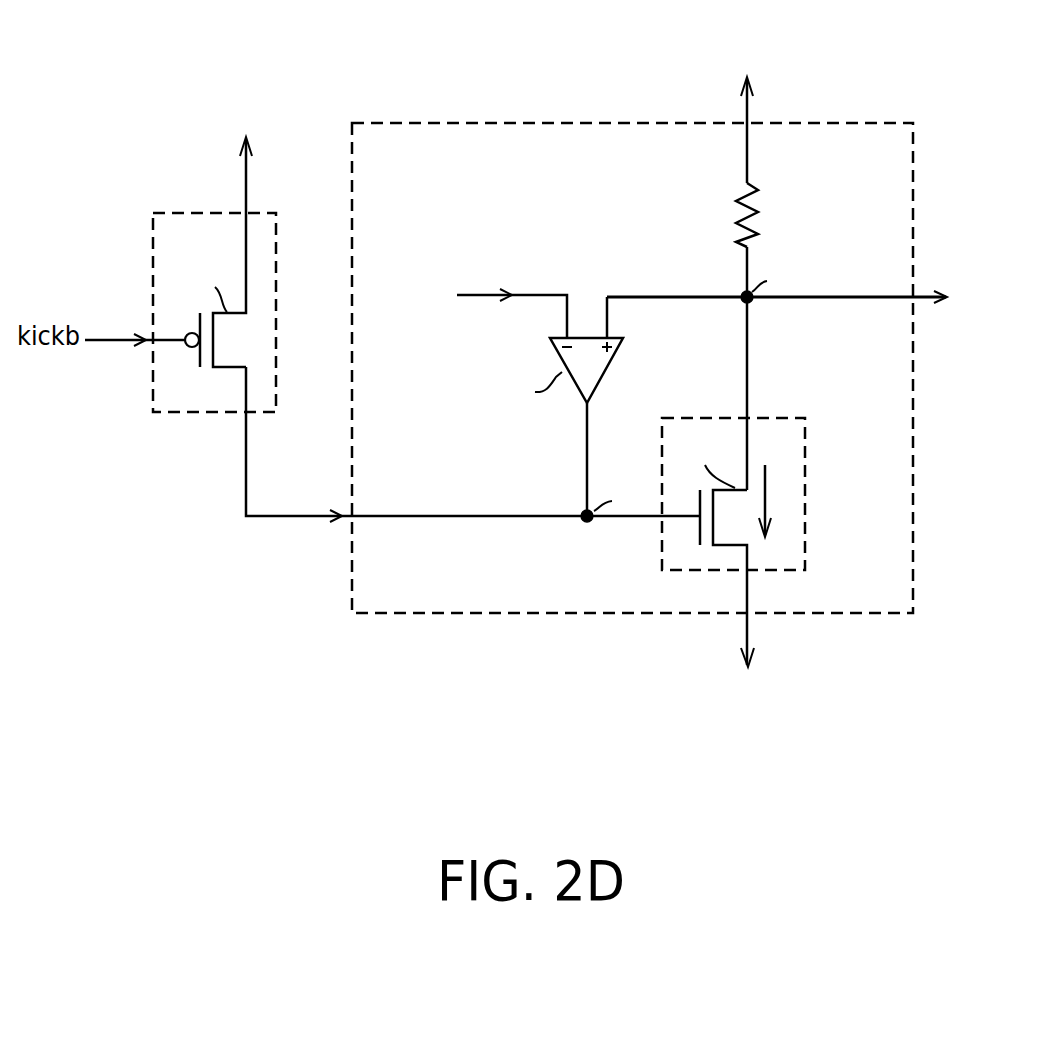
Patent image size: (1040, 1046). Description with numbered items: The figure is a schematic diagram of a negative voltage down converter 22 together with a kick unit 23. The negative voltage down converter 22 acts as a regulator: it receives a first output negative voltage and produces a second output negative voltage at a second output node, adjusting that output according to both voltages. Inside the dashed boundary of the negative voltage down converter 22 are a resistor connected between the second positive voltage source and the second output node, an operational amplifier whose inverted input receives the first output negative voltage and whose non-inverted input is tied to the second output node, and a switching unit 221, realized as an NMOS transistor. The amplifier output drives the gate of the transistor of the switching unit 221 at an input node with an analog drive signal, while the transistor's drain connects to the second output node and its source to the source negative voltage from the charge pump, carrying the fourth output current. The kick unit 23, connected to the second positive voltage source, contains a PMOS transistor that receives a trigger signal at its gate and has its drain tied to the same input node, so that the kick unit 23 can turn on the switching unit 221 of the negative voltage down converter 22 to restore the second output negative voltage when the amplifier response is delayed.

The negative voltage down converter 22 is at (682, 362).
The kick unit 23 is at (192, 213).
The switching unit 221 is at (807, 497).